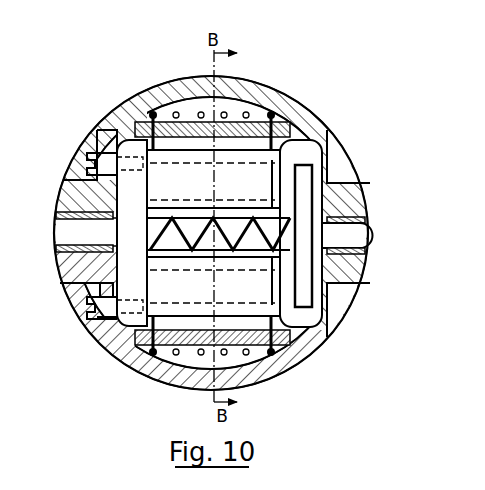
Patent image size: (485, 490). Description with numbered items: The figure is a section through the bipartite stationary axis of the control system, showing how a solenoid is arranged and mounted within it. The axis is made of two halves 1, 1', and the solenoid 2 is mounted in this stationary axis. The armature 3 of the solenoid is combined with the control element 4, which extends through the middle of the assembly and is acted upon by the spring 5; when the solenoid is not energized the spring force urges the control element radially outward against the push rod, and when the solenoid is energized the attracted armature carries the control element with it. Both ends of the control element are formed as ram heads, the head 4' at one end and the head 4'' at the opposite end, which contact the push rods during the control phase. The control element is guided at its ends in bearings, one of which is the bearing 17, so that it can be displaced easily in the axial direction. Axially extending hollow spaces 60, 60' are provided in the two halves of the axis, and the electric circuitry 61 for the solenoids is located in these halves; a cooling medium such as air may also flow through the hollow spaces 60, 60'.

The stationary axis half 1 is at (93, 131).
The stationary axis half 1' is at (87, 331).
The solenoid 2 is at (303, 173).
The armature 3 is at (318, 148).
The control element 4 is at (360, 233).
The head 4' is at (394, 223).
The head 4'' is at (85, 274).
The spring 5 is at (290, 245).
The bearing 17 is at (367, 257).
The hollow space 60 is at (212, 74).
The hollow space 60' is at (235, 376).
The electric circuitry 61 is at (200, 112).